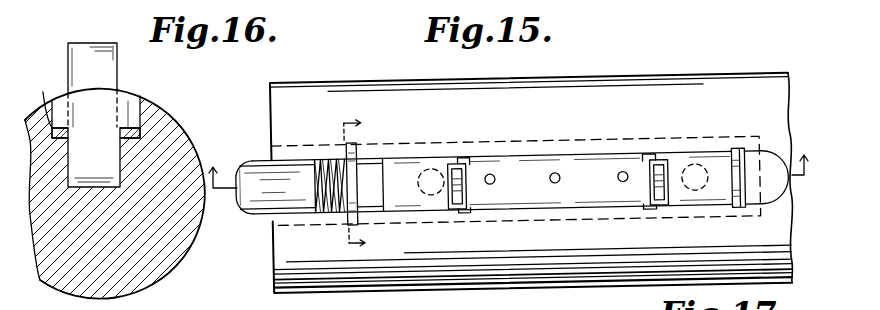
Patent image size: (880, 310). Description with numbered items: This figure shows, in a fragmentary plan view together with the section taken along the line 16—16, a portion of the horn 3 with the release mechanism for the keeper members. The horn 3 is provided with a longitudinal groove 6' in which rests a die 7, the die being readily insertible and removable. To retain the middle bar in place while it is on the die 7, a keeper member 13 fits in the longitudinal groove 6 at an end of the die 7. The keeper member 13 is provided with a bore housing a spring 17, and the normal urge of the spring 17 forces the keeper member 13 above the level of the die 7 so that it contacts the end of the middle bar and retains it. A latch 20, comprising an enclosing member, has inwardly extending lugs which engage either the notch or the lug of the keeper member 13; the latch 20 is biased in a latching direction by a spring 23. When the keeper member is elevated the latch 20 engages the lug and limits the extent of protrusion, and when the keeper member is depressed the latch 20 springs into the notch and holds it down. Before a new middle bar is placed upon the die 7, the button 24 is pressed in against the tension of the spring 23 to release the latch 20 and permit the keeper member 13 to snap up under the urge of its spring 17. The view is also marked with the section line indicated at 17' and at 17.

In FIG. 16, the horn 3 is at (141, 103).
In FIG. 15, the horn 3 is at (387, 78).
In FIG. 16, the longitudinal groove 6 is at (126, 133).
In FIG. 15, the longitudinal groove 6' is at (320, 170).
In FIG. 15, the die 7 is at (513, 157).
In FIG. 16, the keeper member 13 is at (68, 50).
In FIG. 15, the keeper member 13 is at (440, 134).
In FIG. 15, the section line 16— 16 is at (368, 186).
In FIG. 15, the spring 17 is at (511, 161).
In FIG. 15, the collar 17' is at (751, 159).
In FIG. 16, the latch 20 is at (34, 104).
In FIG. 15, the spring 23 is at (330, 207).
In FIG. 15, the button 24 is at (240, 188).